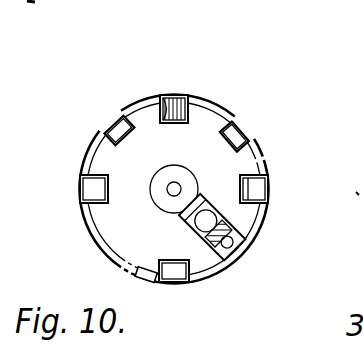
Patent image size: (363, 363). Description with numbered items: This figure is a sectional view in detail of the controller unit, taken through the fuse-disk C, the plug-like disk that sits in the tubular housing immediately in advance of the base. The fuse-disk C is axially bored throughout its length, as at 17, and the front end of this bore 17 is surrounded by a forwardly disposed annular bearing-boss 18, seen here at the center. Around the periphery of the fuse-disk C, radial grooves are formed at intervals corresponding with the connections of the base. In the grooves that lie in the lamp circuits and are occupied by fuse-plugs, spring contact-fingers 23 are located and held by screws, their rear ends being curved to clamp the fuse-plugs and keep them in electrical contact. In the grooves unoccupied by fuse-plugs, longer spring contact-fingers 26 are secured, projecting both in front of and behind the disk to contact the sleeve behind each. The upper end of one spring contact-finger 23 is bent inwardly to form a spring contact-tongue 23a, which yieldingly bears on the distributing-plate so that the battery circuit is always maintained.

The fuse-disk C is at (105, 212).
The axial bore 17 is at (171, 194).
The annular bearing-boss 18 is at (181, 176).
The spring contact-fingers 23 is at (118, 126).
The spring contact-tongue 23a is at (205, 220).
The spring contact-fingers 26 is at (179, 103).